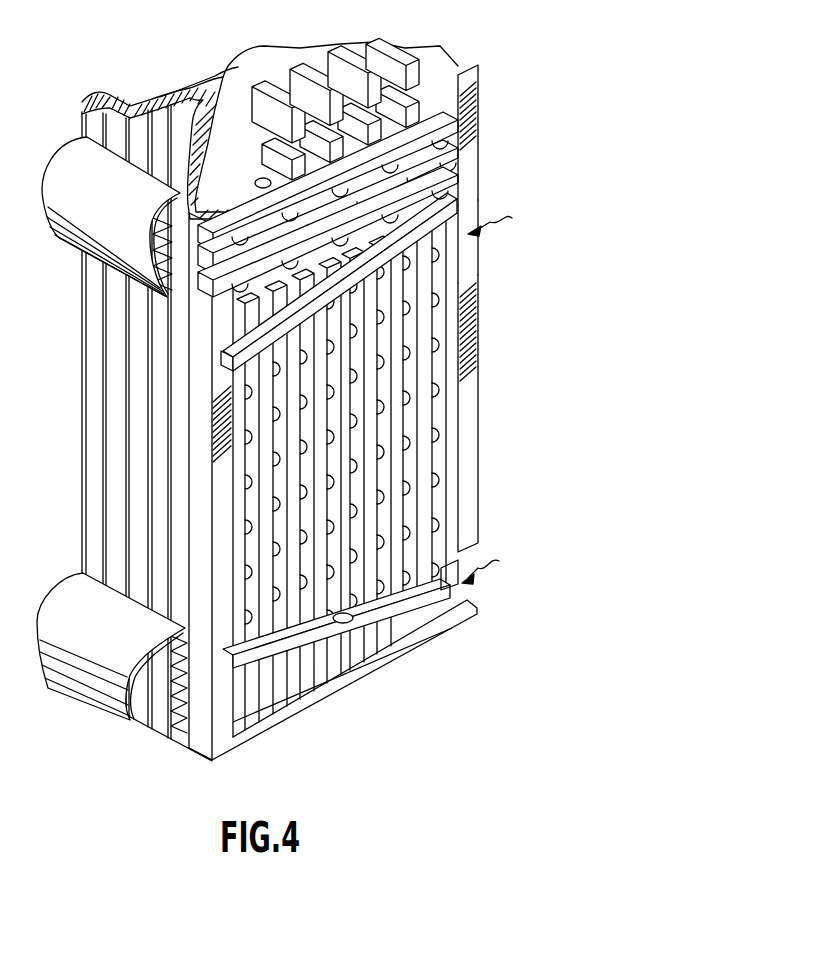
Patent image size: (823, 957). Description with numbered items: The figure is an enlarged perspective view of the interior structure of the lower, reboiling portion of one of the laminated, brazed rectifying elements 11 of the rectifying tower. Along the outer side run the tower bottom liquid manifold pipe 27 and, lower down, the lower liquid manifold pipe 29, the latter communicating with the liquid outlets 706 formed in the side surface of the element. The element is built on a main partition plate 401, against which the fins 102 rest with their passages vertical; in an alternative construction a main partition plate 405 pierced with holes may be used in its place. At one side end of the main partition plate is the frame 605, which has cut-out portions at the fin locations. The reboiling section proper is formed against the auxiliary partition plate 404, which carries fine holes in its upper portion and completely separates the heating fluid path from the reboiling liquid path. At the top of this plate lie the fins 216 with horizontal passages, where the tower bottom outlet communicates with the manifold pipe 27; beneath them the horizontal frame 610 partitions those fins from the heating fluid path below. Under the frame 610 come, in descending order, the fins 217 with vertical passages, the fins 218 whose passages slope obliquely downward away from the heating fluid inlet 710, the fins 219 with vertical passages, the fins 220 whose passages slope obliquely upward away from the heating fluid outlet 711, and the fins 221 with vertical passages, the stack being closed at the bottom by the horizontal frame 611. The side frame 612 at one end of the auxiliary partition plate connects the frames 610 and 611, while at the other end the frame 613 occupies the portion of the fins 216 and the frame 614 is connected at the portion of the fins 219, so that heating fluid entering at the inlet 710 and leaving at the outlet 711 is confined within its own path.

The rectifying elements 11 is at (172, 90).
The tower bottom liquid manifold pipe 27 is at (66, 167).
The lower liquid manifold pipe 29 is at (107, 634).
The fins 102 is at (421, 68).
The fins 216 is at (452, 140).
The fins 217 is at (458, 220).
The fins 218 is at (454, 254).
The fins 219 is at (439, 414).
The fins 220 is at (442, 612).
The fins 221 is at (319, 675).
The main partition plate 401 is at (84, 332).
The auxiliary partition plate 404 is at (100, 357).
The main partition plate 405 is at (126, 418).
The frame 605 is at (92, 304).
The frame 610 is at (450, 193).
The horizontal frame 611 is at (403, 662).
The frame 612 is at (108, 392).
The frame 613 is at (478, 108).
The frame 614 is at (479, 345).
The liquid outlets 706 is at (162, 710).
The heating fluid inlet 710 is at (506, 221).
The heating fluid outlet 711 is at (496, 566).